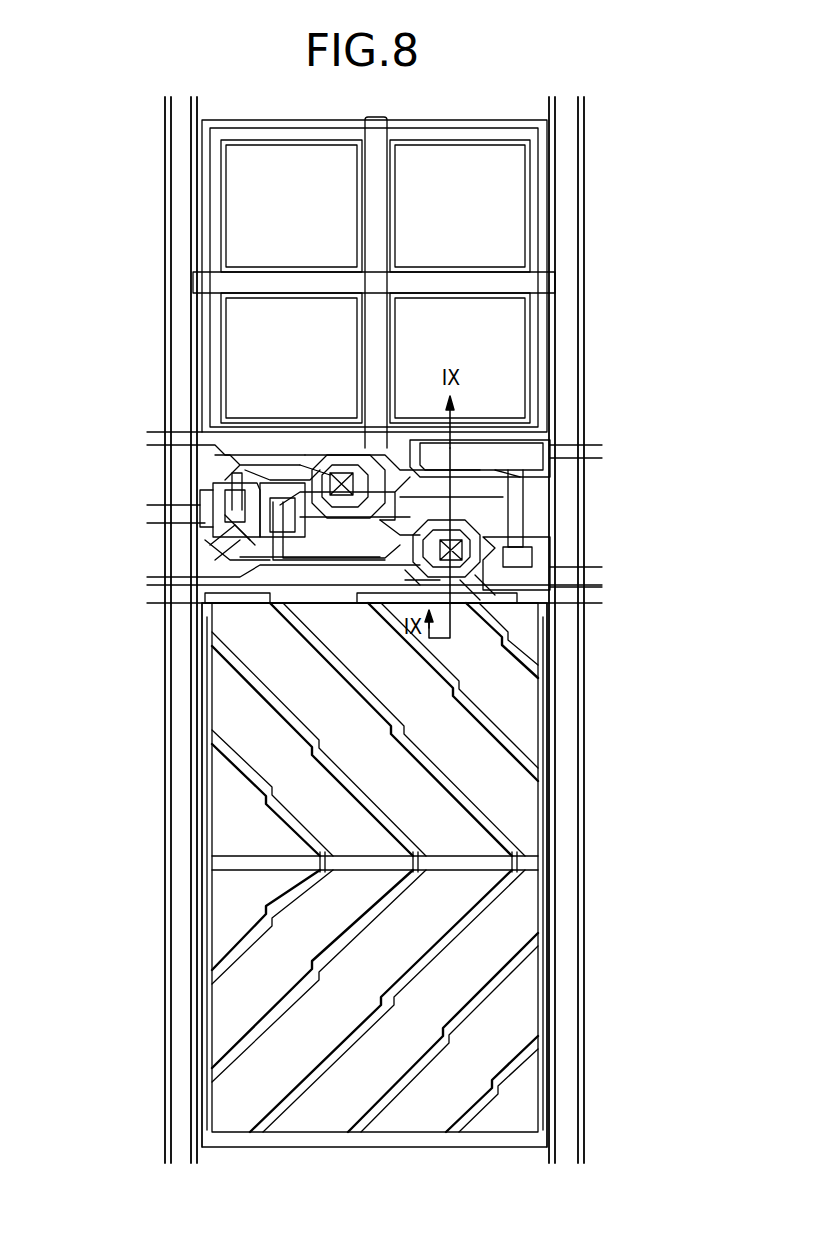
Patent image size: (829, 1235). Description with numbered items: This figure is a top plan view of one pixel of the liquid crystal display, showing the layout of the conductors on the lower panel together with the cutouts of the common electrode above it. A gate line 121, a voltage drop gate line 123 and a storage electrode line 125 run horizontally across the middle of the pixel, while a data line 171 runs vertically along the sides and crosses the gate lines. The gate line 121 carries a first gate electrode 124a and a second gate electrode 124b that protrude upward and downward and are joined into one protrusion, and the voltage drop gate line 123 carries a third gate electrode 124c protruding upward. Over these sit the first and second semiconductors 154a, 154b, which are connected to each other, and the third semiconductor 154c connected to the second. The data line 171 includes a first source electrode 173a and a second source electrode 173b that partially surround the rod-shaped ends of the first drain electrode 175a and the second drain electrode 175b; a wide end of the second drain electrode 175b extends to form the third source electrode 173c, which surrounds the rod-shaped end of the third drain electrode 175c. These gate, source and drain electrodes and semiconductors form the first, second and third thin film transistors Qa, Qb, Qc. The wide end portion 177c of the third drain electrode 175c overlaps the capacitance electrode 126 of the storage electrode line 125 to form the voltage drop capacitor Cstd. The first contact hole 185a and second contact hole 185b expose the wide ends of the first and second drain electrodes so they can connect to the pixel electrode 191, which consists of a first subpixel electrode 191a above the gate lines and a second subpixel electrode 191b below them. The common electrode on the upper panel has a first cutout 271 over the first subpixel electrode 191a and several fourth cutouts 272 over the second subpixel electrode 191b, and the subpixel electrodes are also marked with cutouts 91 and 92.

The data line 171 is at (190, 228).
The first subpixel electrode 191a is at (540, 208).
The second subpixel electrode 191b is at (550, 800).
The pixel electrode 191 is at (679, 980).
The cutout of first subpixel electrode 91 is at (540, 174).
The cutout of second subpixel electrode 92 is at (357, 922).
The first cutout 271 is at (540, 257).
The fourth cutout 272 is at (240, 792).
The gate line 121 is at (545, 504).
The voltage drop gate line 123 is at (545, 586).
The storage electrode line 125 is at (552, 432).
The capacitance electrode 126 is at (548, 487).
The voltage drop capacitor Cstd is at (508, 436).
The first gate electrode 124a is at (228, 550).
The second gate electrode 124b is at (285, 462).
The third gate electrode 124c is at (553, 560).
The first semiconductor 154a is at (236, 488).
The second semiconductor 154b is at (275, 582).
The third semiconductor 154c is at (543, 612).
The first source electrode 173a is at (240, 505).
The second source electrode 173b is at (205, 440).
The third source electrode 173c is at (543, 602).
The first drain electrode 175a is at (233, 482).
The second drain electrode 175b is at (262, 575).
The third drain electrode 175c is at (547, 514).
The wide end portion 177c is at (547, 478).
The first contact hole 185a is at (300, 600).
The second contact hole 185b is at (543, 648).
The first thin film transistor Qa is at (200, 477).
The second thin film transistor Qb is at (318, 468).
The third thin film transistor Qc is at (543, 604).